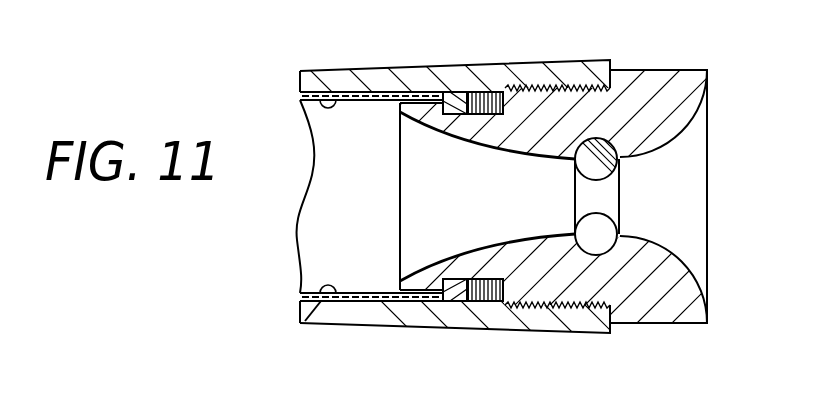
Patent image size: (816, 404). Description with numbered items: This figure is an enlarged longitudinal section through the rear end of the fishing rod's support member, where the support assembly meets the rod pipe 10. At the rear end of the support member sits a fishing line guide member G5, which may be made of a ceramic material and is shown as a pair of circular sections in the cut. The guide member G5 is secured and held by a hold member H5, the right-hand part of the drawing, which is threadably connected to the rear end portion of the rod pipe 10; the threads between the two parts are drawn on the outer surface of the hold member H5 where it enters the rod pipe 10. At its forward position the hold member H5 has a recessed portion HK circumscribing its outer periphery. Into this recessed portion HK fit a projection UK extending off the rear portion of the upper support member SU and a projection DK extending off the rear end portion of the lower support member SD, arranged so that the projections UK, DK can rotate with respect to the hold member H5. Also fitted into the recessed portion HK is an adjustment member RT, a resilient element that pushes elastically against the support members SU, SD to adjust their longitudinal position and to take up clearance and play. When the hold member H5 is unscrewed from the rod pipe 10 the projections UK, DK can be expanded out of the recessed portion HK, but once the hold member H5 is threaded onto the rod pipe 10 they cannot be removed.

The rod pipe 10 is at (369, 78).
The upper support member SU is at (320, 92).
The lower support member SD is at (328, 301).
The projection UK is at (456, 92).
The projection DK is at (461, 301).
The adjustment member RT is at (493, 92).
The recessed portion HK is at (468, 301).
The fishing line guide member G5 is at (600, 155).
The hold member H5 is at (652, 295).